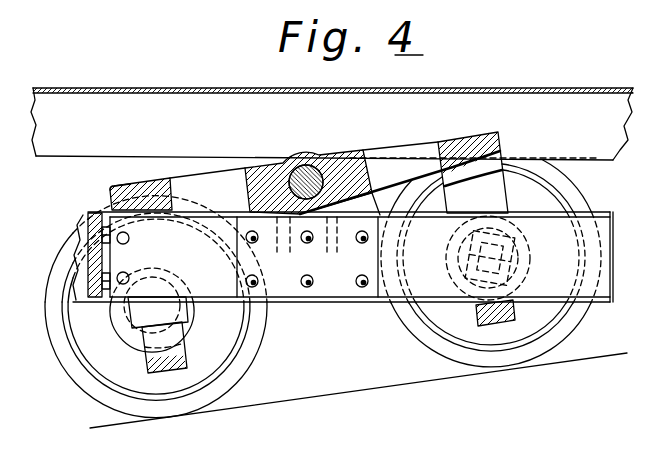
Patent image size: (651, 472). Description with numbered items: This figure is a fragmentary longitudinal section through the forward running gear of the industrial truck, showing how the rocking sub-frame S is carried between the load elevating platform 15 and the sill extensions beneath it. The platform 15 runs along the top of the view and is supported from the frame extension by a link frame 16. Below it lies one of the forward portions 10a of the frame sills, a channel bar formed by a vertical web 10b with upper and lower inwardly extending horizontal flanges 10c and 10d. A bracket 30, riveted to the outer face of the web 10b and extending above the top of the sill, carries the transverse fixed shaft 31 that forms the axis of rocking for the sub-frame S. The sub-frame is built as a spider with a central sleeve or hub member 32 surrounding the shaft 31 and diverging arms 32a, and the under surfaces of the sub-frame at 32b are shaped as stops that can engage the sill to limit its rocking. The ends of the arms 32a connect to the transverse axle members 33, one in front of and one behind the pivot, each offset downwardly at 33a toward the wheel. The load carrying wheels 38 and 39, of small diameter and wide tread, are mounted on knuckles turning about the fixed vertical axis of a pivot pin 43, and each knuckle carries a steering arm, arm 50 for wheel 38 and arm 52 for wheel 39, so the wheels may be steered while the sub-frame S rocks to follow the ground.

The load elevating platform 15 is at (270, 102).
The link frame 16 is at (80, 232).
The forward portions of the sills 10a is at (320, 307).
The vertical web 10b is at (422, 270).
The upper horizontal flange 10c is at (386, 262).
The lower horizontal flange 10d is at (427, 300).
The brackets 30 is at (366, 195).
The transverse fixed shaft 31 is at (306, 167).
The sleeve or hub member 32 is at (340, 148).
The diverging arms 32a is at (238, 148).
The stop surfaces 32b is at (343, 222).
The transverse axle members 33 is at (138, 190).
The downward offset of axle member 33a is at (490, 200).
The load carrying wheel 38 is at (97, 380).
The load carrying wheel 39 is at (513, 352).
The pivot pin 43 is at (165, 277).
The steering arm 50 is at (180, 347).
The steering arm 52 is at (517, 317).
The rocking sub-frame S is at (367, 147).